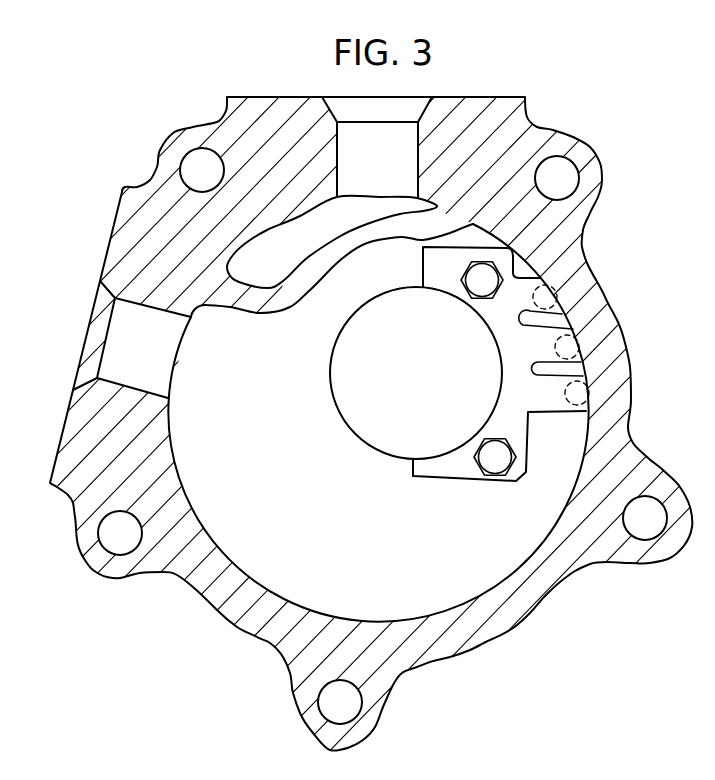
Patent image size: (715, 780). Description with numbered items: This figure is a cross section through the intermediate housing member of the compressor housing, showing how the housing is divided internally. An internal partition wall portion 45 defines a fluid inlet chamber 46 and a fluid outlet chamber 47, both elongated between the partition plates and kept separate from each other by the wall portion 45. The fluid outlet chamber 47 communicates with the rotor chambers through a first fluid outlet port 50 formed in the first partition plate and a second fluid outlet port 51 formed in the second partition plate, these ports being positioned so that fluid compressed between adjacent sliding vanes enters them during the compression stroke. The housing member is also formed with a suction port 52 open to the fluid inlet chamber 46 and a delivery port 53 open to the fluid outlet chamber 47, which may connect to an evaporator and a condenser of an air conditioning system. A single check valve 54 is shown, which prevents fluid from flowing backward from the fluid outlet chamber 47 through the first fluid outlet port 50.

The internal partition wall portion 45 is at (268, 314).
The fluid inlet chamber 46 is at (287, 262).
The fluid outlet chamber 47 is at (275, 497).
The first fluid outlet port 50 is at (549, 288).
The second fluid outlet port 51 is at (572, 317).
The suction port 52 is at (363, 167).
The delivery port 53 is at (124, 356).
The check valve 54 is at (543, 417).